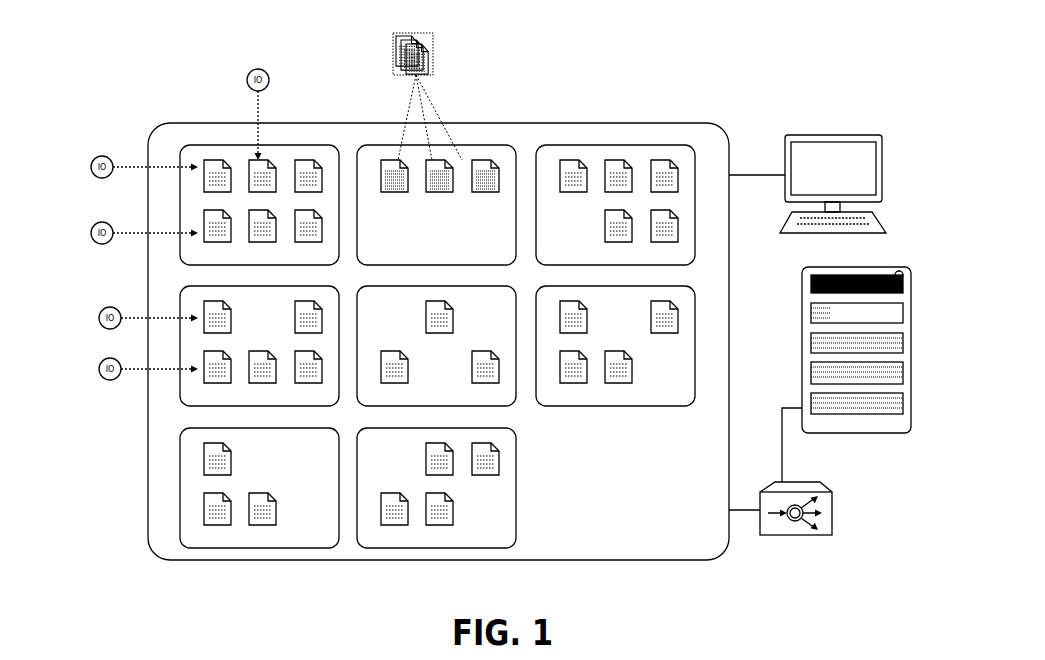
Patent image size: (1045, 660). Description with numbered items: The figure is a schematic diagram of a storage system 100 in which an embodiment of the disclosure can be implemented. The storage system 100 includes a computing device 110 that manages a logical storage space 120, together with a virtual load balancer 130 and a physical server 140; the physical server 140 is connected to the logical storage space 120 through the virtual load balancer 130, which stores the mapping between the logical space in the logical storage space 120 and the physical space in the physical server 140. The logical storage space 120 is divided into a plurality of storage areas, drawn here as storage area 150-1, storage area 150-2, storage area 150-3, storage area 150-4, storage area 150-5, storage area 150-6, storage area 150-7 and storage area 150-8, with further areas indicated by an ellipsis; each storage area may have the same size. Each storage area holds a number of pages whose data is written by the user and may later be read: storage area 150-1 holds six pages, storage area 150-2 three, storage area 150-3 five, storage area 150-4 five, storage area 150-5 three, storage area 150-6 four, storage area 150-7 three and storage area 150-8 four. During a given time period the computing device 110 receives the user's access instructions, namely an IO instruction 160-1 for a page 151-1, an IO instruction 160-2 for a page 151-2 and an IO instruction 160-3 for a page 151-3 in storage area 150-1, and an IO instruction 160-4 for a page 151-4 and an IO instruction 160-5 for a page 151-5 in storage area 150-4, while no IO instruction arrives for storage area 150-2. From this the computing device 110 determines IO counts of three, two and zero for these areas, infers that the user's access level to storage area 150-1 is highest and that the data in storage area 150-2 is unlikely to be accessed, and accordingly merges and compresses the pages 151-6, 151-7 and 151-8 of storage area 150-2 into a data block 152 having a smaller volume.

The storage system 100 is at (172, 34).
The computing device 110 is at (874, 135).
The logical storage space 120 is at (636, 123).
The virtual load balancer 130 is at (833, 508).
The physical server 140 is at (906, 268).
The data block 152 is at (433, 35).
The storage area 150-1 is at (277, 262).
The storage area 150-2 is at (454, 262).
The storage area 150-3 is at (633, 262).
The storage area 150-4 is at (277, 403).
The storage area 150-5 is at (454, 403).
The storage area 150-6 is at (633, 403).
The storage area 150-7 is at (277, 545).
The storage area 150-8 is at (454, 545).
The page 151-1 is at (250, 156).
The page 151-2 is at (197, 160).
The page 151-3 is at (197, 212).
The page 151-4 is at (204, 301).
The page 151-5 is at (204, 353).
The page 151-6 is at (392, 160).
The page 151-7 is at (442, 160).
The page 151-8 is at (482, 160).
The IO instruction 160-1 is at (248, 71).
The IO instruction 160-2 is at (93, 158).
The IO instruction 160-3 is at (93, 224).
The IO instruction 160-4 is at (101, 308).
The IO instruction 160-5 is at (101, 360).